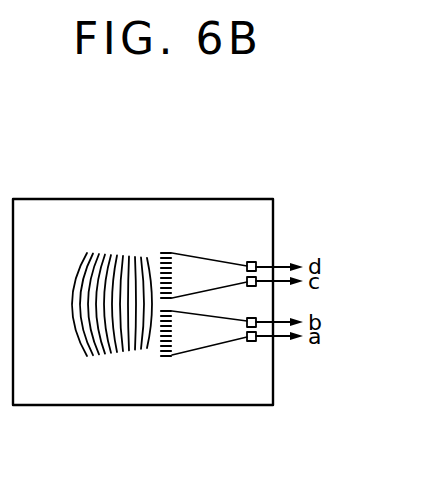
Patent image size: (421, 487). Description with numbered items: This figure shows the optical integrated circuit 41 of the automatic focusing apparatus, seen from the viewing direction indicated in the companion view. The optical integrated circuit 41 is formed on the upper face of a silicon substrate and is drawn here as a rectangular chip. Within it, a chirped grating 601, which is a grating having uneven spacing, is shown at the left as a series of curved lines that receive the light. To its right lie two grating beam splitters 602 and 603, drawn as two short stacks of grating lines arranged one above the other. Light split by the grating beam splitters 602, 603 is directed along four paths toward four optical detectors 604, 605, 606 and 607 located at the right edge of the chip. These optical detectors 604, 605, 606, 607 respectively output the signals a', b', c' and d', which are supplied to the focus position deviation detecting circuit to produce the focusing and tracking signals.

The optical integrated circuit 41 is at (273, 198).
The chirped grating 601 is at (97, 250).
The grating beam splitter 602 is at (167, 249).
The grating beam splitter 603 is at (166, 358).
The optical detector 604 is at (255, 341).
The optical detector 605 is at (254, 318).
The optical detector 606 is at (240, 266).
The optical detector 607 is at (255, 262).